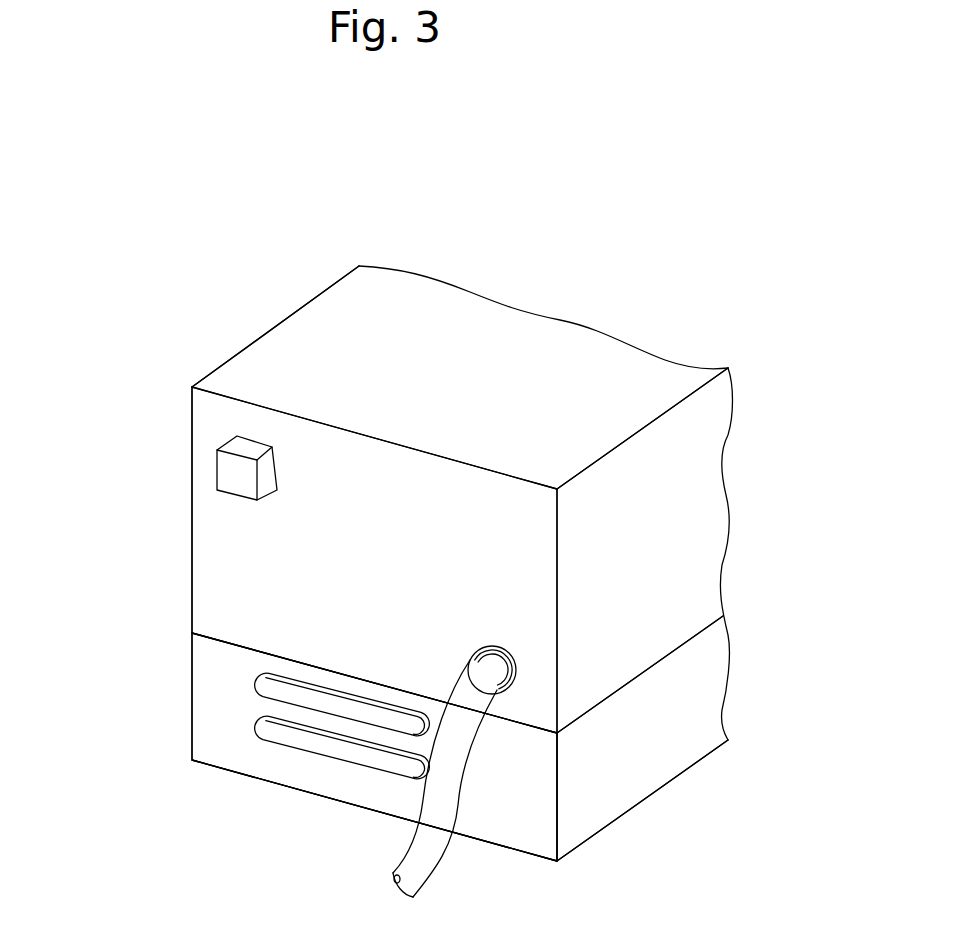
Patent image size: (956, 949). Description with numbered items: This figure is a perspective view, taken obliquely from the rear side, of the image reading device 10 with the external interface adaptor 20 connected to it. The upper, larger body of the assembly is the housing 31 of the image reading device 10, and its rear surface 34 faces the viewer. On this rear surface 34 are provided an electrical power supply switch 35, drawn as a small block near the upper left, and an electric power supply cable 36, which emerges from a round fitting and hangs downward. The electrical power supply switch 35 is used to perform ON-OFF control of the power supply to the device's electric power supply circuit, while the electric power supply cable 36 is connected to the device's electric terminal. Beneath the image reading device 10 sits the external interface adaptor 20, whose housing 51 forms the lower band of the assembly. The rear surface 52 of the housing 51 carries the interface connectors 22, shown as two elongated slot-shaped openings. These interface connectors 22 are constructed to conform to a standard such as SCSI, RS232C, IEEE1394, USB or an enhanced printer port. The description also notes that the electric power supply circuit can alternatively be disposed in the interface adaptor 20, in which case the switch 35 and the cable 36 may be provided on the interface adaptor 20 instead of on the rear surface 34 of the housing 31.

The image reading device 10 is at (233, 332).
The external interface adaptor 20 is at (687, 777).
The interface connectors 22 is at (282, 692).
The housing 31 is at (315, 297).
The rear surface 34 is at (220, 582).
The electrical power supply switch 35 is at (233, 472).
The electric power supply cable 36 is at (430, 857).
The housing 51 is at (190, 708).
The rear surface 52 is at (215, 670).